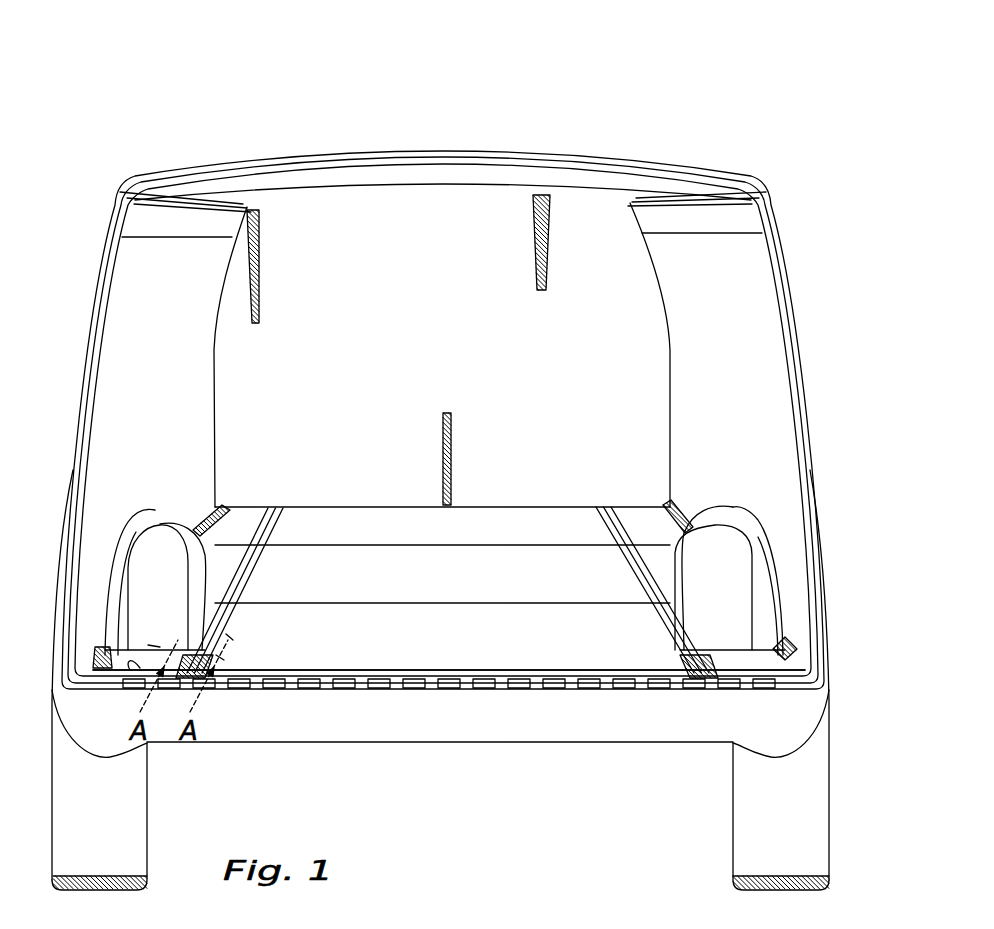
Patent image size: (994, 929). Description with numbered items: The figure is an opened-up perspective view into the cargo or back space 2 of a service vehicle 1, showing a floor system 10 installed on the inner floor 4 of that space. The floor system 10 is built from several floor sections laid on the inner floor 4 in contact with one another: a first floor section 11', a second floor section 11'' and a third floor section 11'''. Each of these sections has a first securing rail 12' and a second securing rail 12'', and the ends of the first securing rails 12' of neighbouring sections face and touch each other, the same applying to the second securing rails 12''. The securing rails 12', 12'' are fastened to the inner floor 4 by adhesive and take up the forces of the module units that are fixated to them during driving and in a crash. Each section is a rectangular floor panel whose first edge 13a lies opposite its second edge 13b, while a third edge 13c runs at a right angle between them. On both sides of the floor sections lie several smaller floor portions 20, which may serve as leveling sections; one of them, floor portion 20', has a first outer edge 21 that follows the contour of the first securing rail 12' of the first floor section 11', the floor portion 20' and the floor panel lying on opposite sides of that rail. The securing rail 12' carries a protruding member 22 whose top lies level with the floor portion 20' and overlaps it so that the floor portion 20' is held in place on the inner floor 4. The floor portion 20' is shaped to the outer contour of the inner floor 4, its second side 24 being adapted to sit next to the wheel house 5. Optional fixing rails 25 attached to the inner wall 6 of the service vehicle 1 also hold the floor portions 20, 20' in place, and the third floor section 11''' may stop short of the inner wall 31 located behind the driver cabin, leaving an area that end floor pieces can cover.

The service vehicle 1 is at (628, 133).
The cargo or back space 2 is at (460, 215).
The inner wall 31 is at (371, 217).
The inner wall 6 is at (118, 306).
The wheel house 5 is at (183, 543).
The fixing rails 25 is at (207, 522).
The floor portions 20 is at (445, 543).
The first securing rail 12' is at (263, 590).
The second securing rail 12'' is at (635, 591).
The protruding member 22 is at (157, 672).
The floor portion 20' is at (103, 693).
The second side 24 is at (152, 645).
The first outer edge 21 is at (230, 657).
The third edge 13c is at (227, 637).
The second edge 13b is at (505, 507).
The first edge 13a is at (550, 546).
The first floor section 11' is at (449, 648).
The second floor section 11'' is at (442, 582).
The third floor section 11''' is at (442, 529).
The inner floor 4 is at (727, 690).
The floor system 10 is at (587, 630).